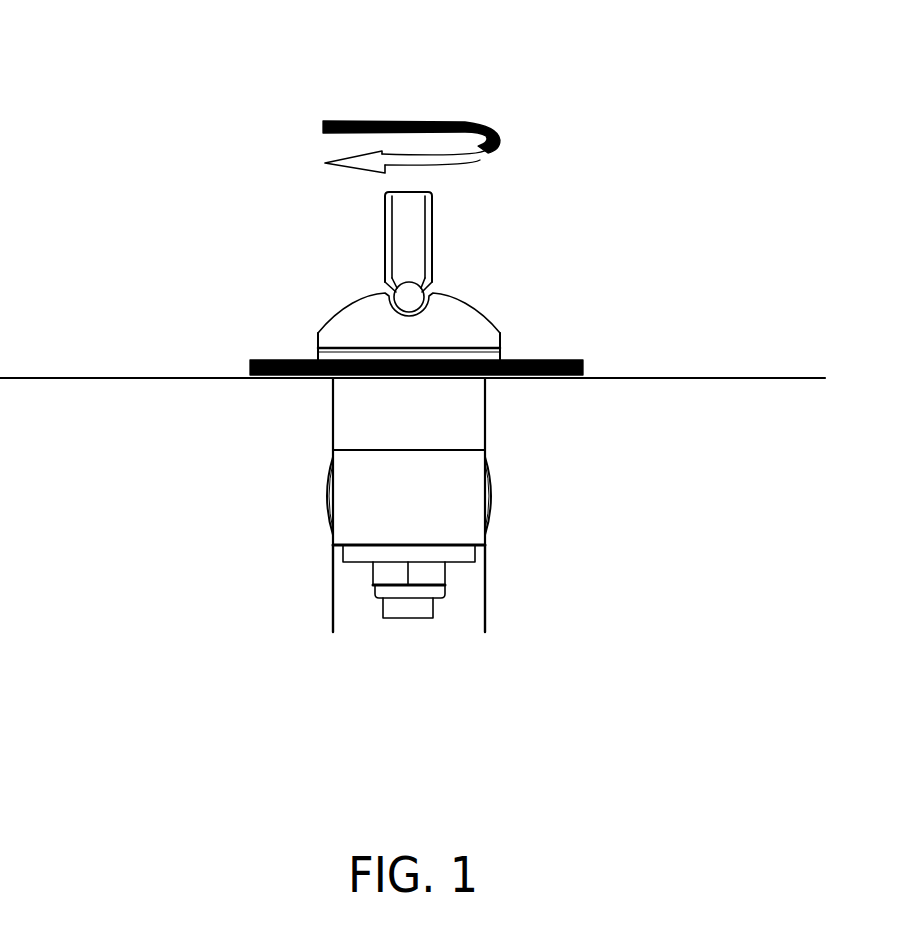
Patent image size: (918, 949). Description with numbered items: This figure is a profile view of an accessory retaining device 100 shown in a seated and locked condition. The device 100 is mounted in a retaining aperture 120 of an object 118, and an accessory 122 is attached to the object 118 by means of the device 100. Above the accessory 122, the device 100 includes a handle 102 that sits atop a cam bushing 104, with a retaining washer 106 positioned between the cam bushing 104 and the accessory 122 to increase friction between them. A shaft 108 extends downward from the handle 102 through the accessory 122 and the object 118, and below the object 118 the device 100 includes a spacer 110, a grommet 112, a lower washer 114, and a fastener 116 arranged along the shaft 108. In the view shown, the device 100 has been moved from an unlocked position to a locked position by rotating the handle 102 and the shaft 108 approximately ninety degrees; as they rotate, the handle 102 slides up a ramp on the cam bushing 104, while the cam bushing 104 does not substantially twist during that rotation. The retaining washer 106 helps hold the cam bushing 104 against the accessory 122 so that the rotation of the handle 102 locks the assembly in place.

The accessory retaining device 100 is at (143, 56).
The handle 102 is at (385, 221).
The cam bushing 104 is at (337, 316).
The retaining washer 106 is at (503, 348).
The shaft 108 is at (395, 617).
The spacer 110 is at (333, 410).
The grommet 112 is at (327, 487).
The lower washer 114 is at (347, 550).
The fastener 116 is at (375, 572).
The object 118 is at (677, 380).
The retaining aperture 120 is at (488, 618).
The accessory 122 is at (583, 368).